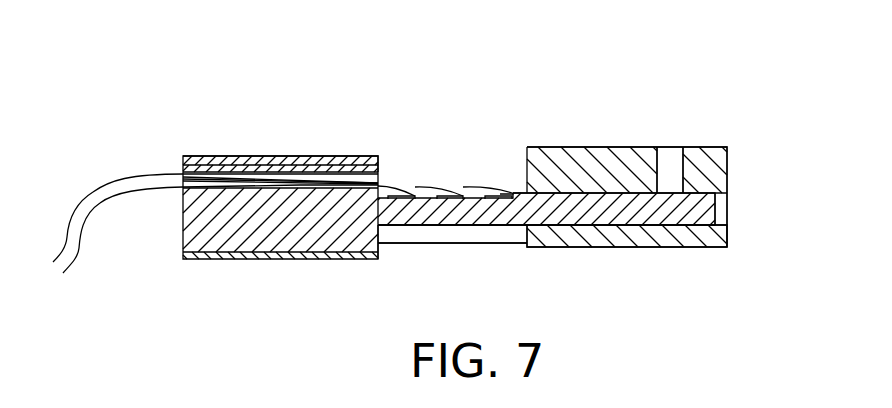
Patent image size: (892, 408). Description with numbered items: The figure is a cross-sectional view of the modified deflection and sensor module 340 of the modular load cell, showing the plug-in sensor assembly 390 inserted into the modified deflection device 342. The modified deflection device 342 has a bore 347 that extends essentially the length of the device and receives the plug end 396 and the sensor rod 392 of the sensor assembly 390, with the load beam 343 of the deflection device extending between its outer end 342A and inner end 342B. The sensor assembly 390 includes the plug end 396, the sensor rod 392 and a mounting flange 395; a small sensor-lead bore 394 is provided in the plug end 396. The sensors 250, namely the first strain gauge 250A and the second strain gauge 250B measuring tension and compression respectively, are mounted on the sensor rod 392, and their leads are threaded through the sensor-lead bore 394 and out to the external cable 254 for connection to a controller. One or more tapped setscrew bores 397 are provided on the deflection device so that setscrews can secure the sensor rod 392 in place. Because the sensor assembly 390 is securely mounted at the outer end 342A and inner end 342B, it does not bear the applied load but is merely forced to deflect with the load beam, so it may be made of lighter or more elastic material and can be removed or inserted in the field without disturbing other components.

The external cable 254 is at (107, 193).
The modified deflection and sensor module 340 is at (654, 80).
The modified deflection device 342 is at (348, 158).
The outer end 342A is at (220, 260).
The inner end 342B is at (708, 247).
The channel 343 is at (495, 238).
The bore 347 is at (248, 158).
The sensor assembly 390 is at (215, 202).
The sensor rod 392 is at (700, 217).
The sensor-lead bore 394 is at (380, 258).
The mounting flange 395 is at (178, 180).
The plug end 396 is at (284, 206).
The tapped setscrew bore 397 is at (668, 165).
The sensors 250 is at (462, 193).
The first strain gauge 250A is at (405, 196).
The second strain gauge 250B is at (505, 192).